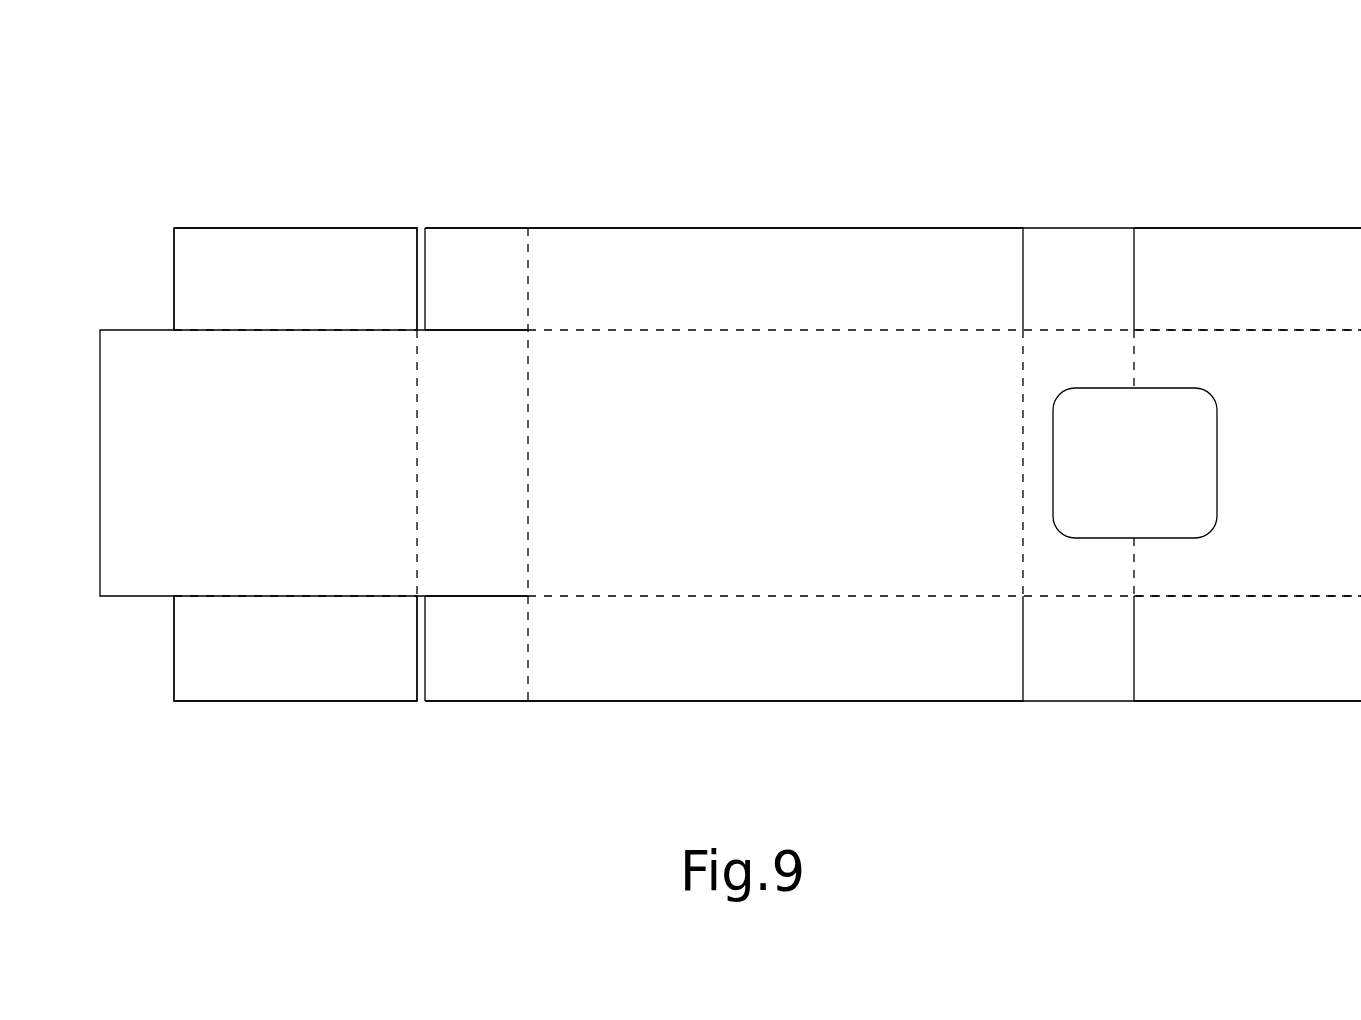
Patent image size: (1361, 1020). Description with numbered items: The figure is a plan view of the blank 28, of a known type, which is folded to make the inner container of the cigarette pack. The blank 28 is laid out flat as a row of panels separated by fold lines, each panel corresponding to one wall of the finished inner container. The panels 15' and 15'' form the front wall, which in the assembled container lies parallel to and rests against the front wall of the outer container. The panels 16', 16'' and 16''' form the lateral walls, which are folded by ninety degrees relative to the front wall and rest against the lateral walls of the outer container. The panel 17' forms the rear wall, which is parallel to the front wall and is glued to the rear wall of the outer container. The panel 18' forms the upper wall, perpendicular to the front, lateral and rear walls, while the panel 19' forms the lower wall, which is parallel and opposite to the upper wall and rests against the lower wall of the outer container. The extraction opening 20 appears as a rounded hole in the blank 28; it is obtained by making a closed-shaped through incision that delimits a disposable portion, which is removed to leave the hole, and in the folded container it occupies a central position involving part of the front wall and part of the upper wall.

The blank 28 is at (1210, 126).
The front wall panel 15' is at (1247, 463).
The front wall panel 15'' is at (295, 463).
The lateral wall panel 16' is at (1247, 464).
The lateral wall panel 16'' is at (295, 464).
The lateral wall panel 16''' is at (724, 464).
The rear wall panel 17' is at (944, 463).
The upper wall panel 18' is at (1090, 464).
The lower wall panel 19' is at (476, 464).
The extraction opening 20 is at (1104, 538).